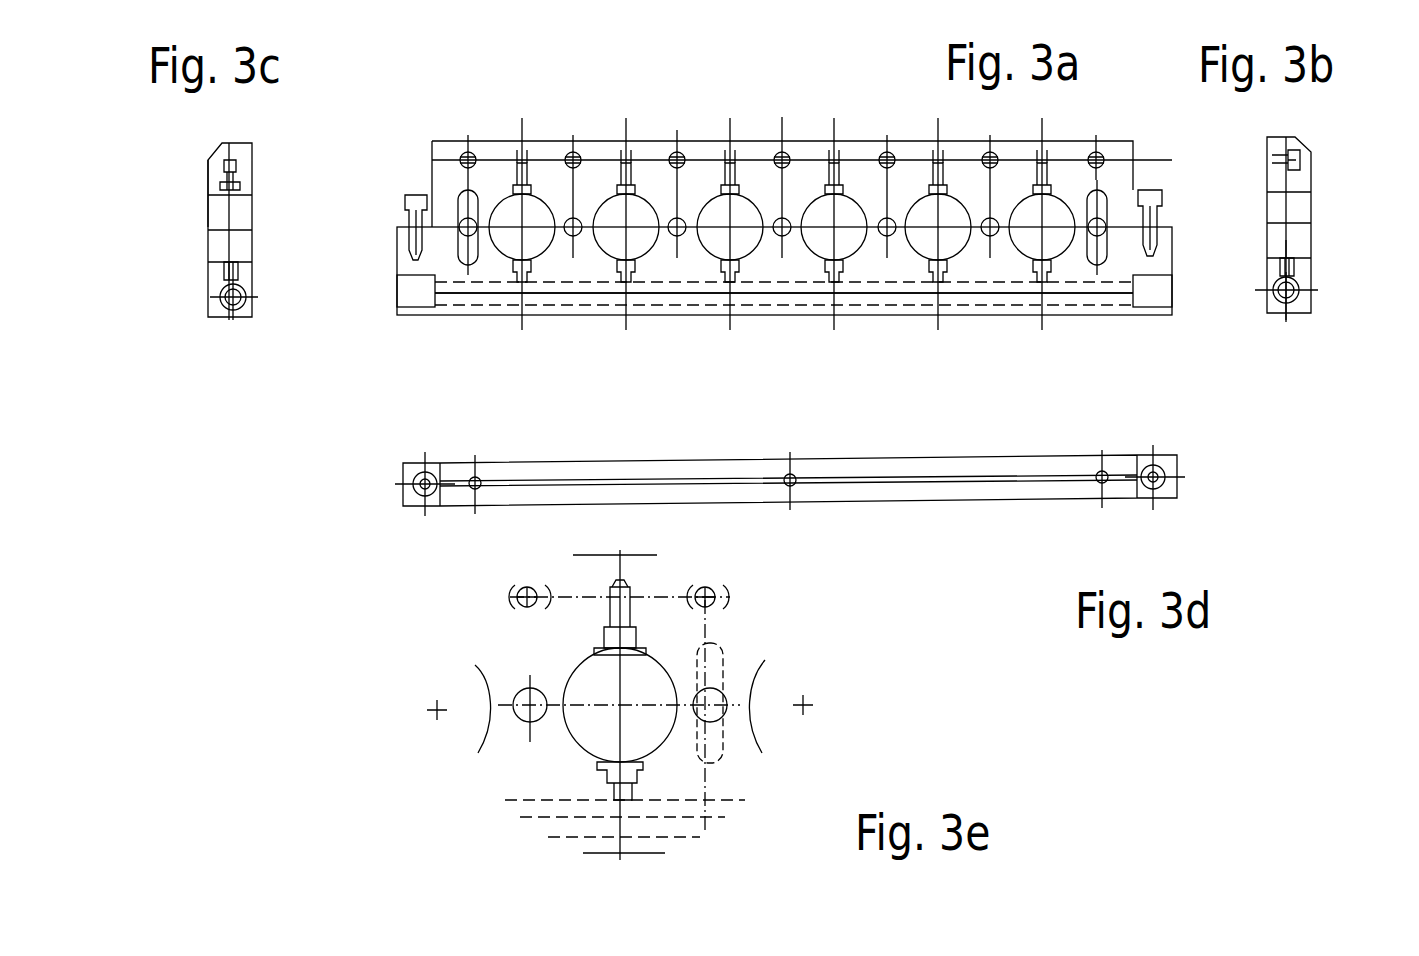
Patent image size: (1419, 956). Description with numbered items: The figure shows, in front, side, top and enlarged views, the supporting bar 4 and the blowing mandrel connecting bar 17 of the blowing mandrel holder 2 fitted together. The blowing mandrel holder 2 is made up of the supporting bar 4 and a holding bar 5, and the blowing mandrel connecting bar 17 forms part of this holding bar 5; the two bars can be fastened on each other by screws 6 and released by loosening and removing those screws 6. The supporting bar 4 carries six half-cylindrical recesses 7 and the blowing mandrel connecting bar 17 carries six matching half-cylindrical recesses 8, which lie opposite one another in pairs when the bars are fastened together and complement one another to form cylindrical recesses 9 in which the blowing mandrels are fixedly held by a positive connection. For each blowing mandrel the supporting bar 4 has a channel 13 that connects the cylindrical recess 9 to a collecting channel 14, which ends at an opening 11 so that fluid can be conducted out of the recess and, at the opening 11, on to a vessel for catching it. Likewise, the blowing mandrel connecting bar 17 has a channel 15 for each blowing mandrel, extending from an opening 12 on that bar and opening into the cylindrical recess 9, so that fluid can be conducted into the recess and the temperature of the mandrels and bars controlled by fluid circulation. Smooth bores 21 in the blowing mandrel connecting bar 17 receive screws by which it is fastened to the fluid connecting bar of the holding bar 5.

In FIG. 3A, the blowing mandrel holder 2 is at (700, 100).
In FIG. 3A, the supporting bar 4 is at (1172, 255).
In FIG. 3C, the supporting bar 4 is at (252, 282).
In FIG. 3B, the supporting bar 4 is at (1312, 236).
In FIG. 3E, the supporting bar 4 is at (756, 773).
In FIG. 3A, the holding bar 5 is at (1146, 144).
In FIG. 3A, the screws 6 is at (442, 196).
In FIG. 3D, the screws 6 is at (1155, 457).
In FIG. 3A, the half-cylindrical recesses 7 is at (545, 258).
In FIG. 3E, the half-cylindrical recesses 7 is at (665, 753).
In FIG. 3A, the half-cylindrical recesses 8 is at (548, 195).
In FIG. 3E, the half-cylindrical recesses 8 is at (582, 670).
In FIG. 3A, the cylindrical recess 9 is at (510, 240).
In FIG. 3E, the cylindrical recess 9 is at (592, 723).
In FIG. 3A, the opening 11 is at (397, 302).
In FIG. 3C, the opening 11 is at (240, 314).
In FIG. 3B, the opening 11 is at (1295, 292).
In FIG. 3A, the opening 12 is at (618, 176).
In FIG. 3C, the opening 12 is at (252, 148).
In FIG. 3E, the opening 12 is at (628, 612).
In FIG. 3A, the channel 13 is at (950, 264).
In FIG. 3C, the channel 13 is at (215, 278).
In FIG. 3B, the channel 13 is at (1298, 265).
In FIG. 3E, the channel 13 is at (645, 779).
In FIG. 3A, the collecting channel 14 is at (1085, 300).
In FIG. 3E, the collecting channel 14 is at (557, 819).
In FIG. 3A, the channel 15 is at (853, 172).
In FIG. 3C, the channel 15 is at (253, 172).
In FIG. 3E, the channel 15 is at (612, 612).
In FIG. 3A, the blowing mandrel connecting bar 17 is at (1136, 170).
In FIG. 3C, the blowing mandrel connecting bar 17 is at (208, 175).
In FIG. 3B, the blowing mandrel connecting bar 17 is at (1313, 178).
In FIG. 3D, the blowing mandrel connecting bar 17 is at (720, 463).
In FIG. 3E, the blowing mandrel connecting bar 17 is at (745, 618).
In FIG. 3A, the smooth bores 21 is at (796, 152).